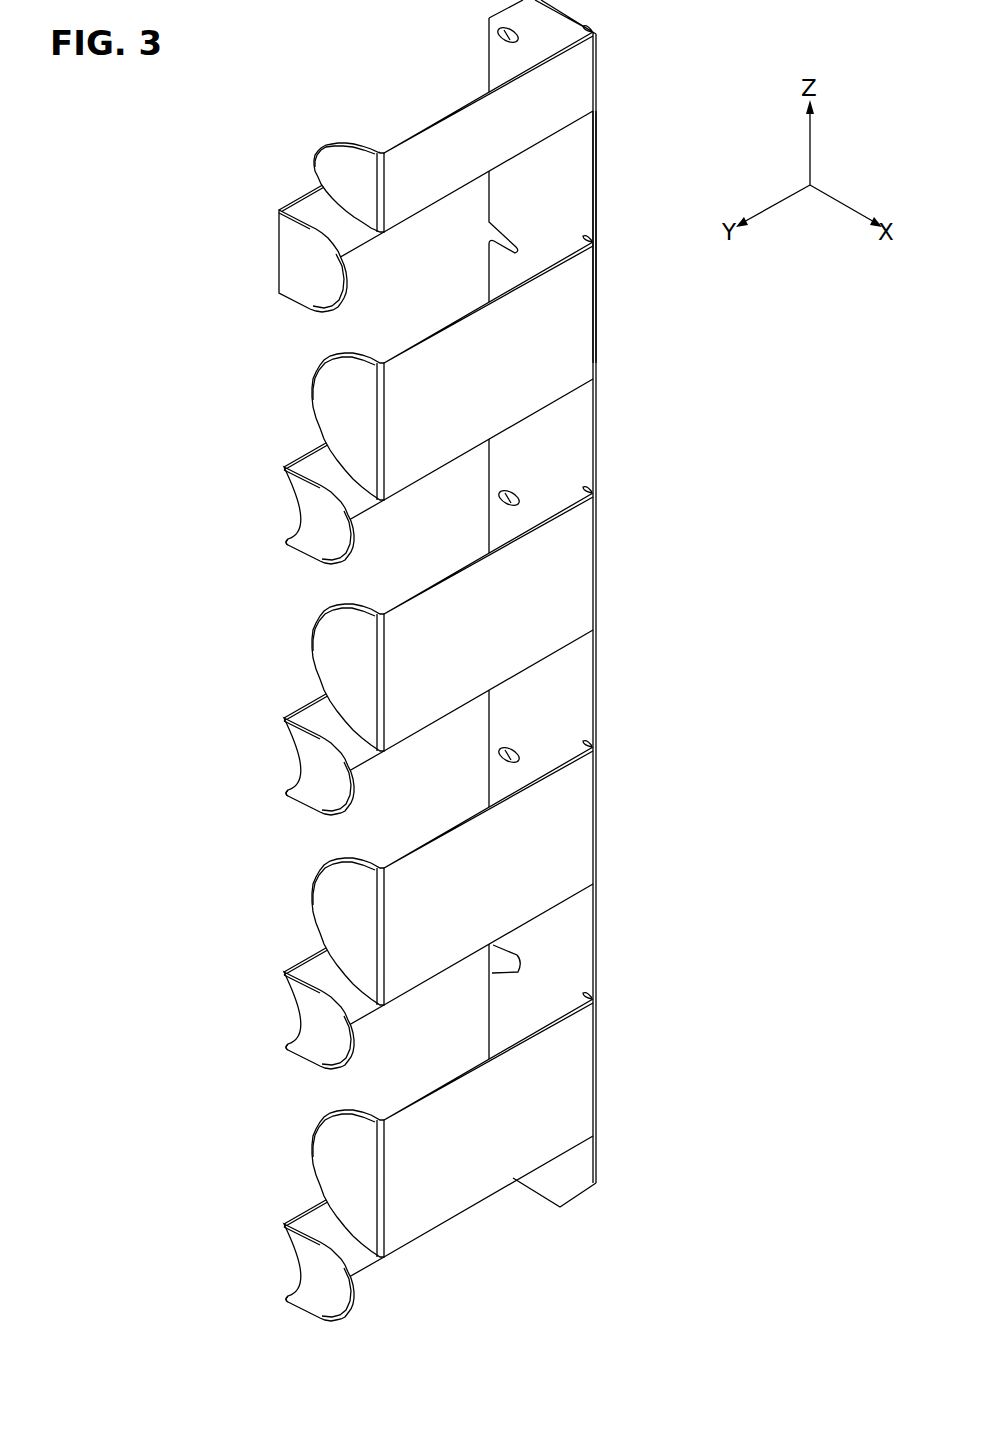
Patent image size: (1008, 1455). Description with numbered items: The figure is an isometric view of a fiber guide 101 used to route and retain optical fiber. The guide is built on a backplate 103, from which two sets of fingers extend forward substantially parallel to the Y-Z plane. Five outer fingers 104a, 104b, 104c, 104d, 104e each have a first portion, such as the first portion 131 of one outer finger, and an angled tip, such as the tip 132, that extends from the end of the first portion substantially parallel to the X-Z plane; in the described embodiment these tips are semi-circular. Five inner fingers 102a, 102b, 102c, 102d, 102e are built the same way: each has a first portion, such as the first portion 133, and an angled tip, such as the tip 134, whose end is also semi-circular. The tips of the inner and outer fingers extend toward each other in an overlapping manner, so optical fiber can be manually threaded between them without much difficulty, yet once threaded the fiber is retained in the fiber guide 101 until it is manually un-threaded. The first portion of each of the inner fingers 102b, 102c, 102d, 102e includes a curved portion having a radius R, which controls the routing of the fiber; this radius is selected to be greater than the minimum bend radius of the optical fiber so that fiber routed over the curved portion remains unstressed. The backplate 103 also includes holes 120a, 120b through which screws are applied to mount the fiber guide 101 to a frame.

The fiber guide 101 is at (570, 1220).
The backplate 103 is at (585, 186).
The first portion 131 is at (585, 300).
The hole 120a is at (497, 30).
The hole 120b is at (505, 500).
The outer finger 104a is at (590, 78).
The outer finger 104b is at (590, 352).
The outer finger 104c is at (590, 580).
The outer finger 104d is at (590, 835).
The outer finger 104e is at (590, 1078).
The inner finger 102a is at (268, 212).
The inner finger 102b is at (272, 541).
The inner finger 102c is at (351, 775).
The inner finger 102d is at (272, 968).
The inner finger 102e is at (274, 1219).
The tip 132 is at (333, 407).
The first portion 133 is at (318, 700).
The tip 134 is at (318, 810).
The radius R is at (290, 512).